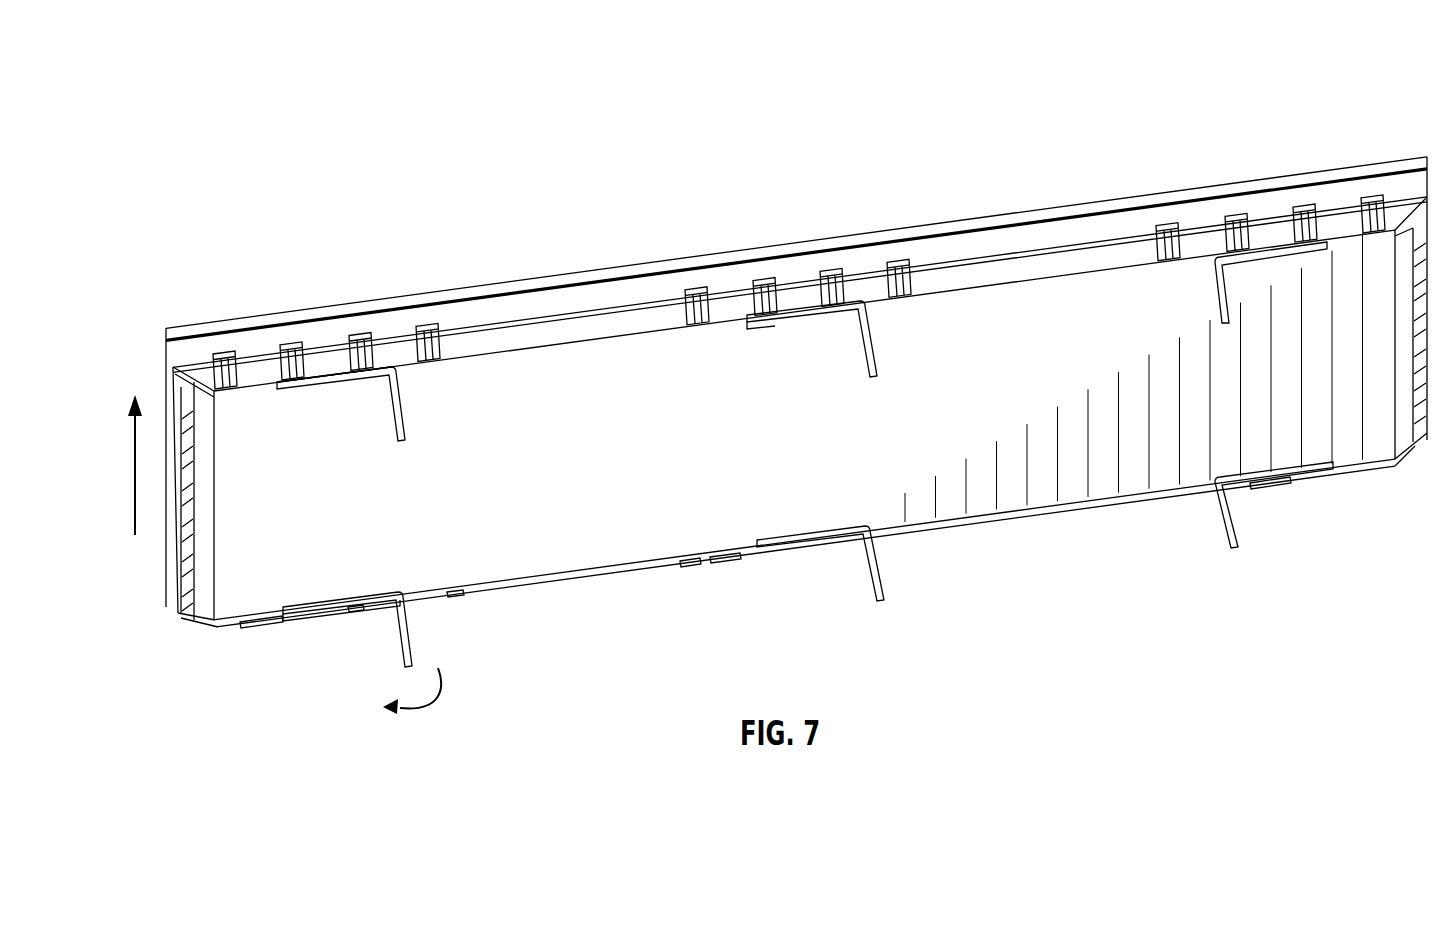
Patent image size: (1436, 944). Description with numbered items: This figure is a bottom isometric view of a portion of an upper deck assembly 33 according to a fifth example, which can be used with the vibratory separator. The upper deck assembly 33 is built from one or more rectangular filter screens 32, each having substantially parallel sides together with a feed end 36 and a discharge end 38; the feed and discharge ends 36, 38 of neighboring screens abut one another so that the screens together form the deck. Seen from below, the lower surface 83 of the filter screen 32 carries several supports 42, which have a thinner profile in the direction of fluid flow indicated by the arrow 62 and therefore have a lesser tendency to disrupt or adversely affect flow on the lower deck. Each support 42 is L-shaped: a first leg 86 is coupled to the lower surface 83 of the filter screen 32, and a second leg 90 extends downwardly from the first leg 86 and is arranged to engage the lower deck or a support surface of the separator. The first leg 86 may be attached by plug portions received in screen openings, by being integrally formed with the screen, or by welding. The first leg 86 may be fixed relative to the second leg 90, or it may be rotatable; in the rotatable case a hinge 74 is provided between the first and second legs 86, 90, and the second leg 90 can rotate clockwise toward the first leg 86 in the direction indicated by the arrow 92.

The filter screen 32 is at (223, 332).
The upper deck assembly 33 is at (1001, 83).
The feed end 36 is at (648, 290).
The discharge end 38 is at (630, 515).
The support 42 is at (863, 347).
The arrow 62 is at (137, 477).
The hinge 74 is at (396, 370).
The lower surface 83 is at (487, 568).
The first leg 86 is at (310, 607).
The second leg 90 is at (397, 418).
The arrow 92 is at (433, 700).